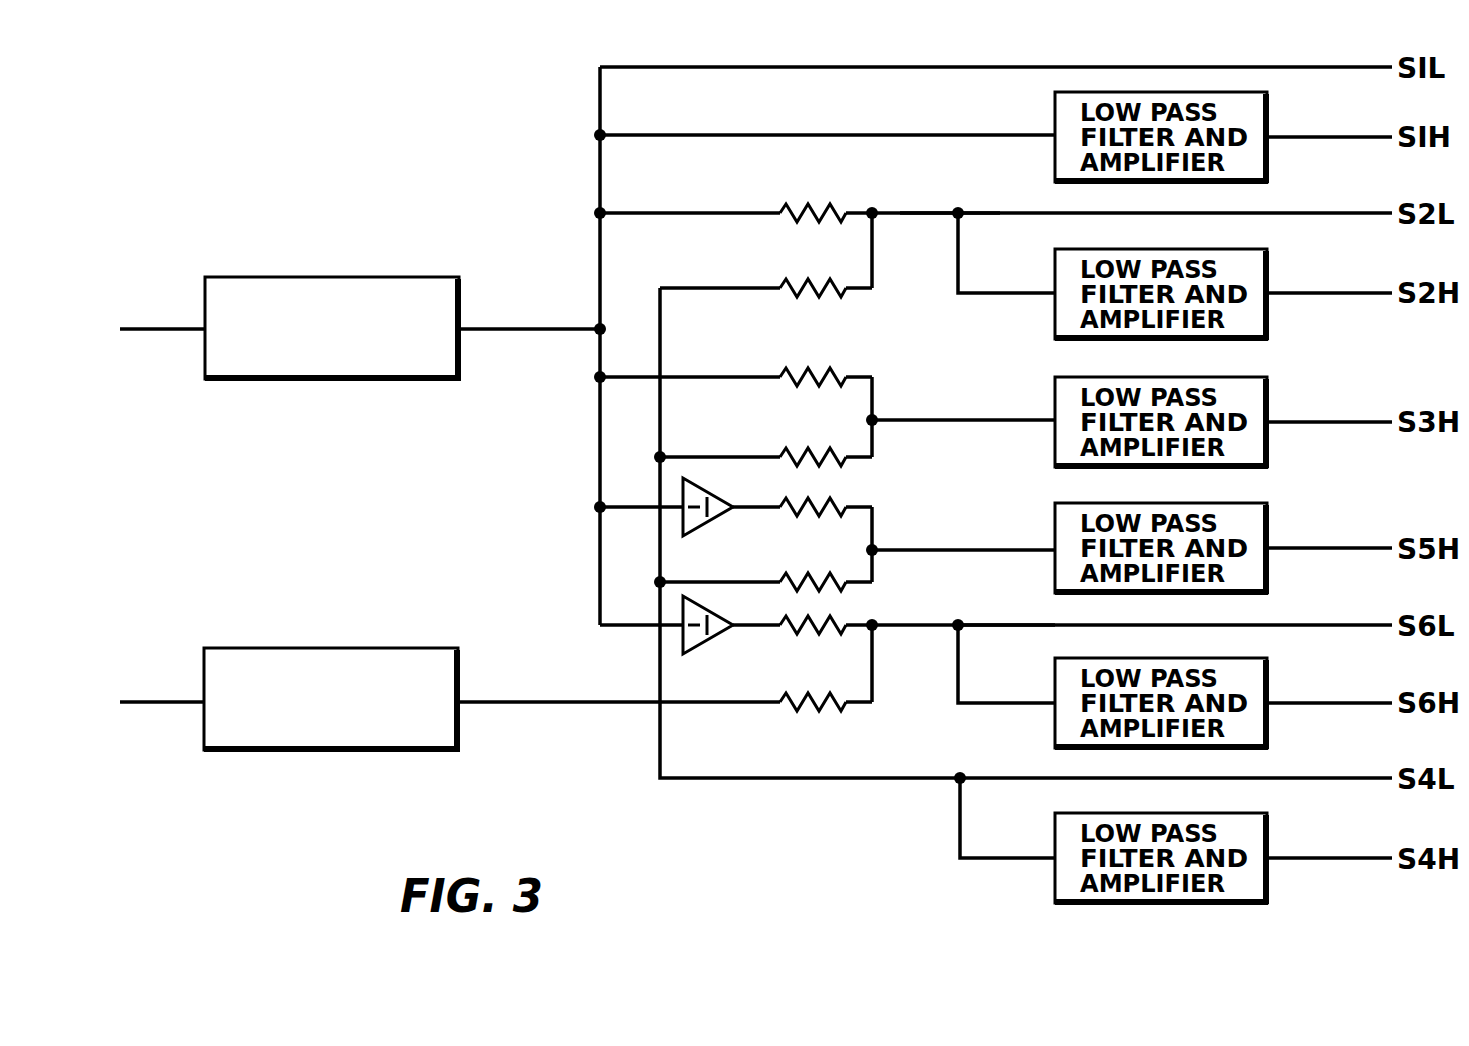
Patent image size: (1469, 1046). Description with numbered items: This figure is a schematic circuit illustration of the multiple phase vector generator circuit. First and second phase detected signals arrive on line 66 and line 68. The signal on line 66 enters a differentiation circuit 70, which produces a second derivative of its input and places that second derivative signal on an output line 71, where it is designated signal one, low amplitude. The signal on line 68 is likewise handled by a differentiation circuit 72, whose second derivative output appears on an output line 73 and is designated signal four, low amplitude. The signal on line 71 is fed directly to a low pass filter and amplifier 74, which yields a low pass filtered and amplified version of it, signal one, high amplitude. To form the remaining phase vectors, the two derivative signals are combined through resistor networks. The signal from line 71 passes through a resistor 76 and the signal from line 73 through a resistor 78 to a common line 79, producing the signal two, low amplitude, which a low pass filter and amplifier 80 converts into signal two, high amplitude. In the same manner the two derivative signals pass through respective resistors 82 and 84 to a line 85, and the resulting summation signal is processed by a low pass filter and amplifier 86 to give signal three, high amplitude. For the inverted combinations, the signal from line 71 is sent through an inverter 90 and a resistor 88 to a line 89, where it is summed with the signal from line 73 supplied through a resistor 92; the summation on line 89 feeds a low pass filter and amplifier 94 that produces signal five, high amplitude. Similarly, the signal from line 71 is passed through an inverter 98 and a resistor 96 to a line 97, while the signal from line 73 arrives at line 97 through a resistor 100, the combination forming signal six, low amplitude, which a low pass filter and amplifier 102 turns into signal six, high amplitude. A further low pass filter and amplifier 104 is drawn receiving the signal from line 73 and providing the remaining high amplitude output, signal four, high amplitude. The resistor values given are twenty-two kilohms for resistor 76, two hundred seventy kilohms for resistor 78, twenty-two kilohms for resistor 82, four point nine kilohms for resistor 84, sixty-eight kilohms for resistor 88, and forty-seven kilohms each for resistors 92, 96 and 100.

The line 66 is at (150, 328).
The line 68 is at (152, 702).
The differentiation circuit 70 is at (365, 292).
The output line 71 is at (521, 329).
The differentiation circuit 72 is at (332, 665).
The output line 73 is at (543, 701).
The low pass filter and amplifier 74 is at (1248, 124).
The resistor 76 is at (801, 203).
The resistor 78 is at (799, 280).
The line 79 is at (934, 213).
The low pass filter and amplifier 80 is at (1254, 272).
The resistor 82 is at (816, 374).
The resistor 84 is at (801, 450).
The line 85 is at (958, 420).
The low pass filter and amplifier 86 is at (1254, 401).
The resistor 88 is at (826, 506).
The line 89 is at (976, 550).
The inverter 90 is at (692, 523).
The resistor 92 is at (810, 580).
The low pass filter and amplifier 94 is at (1254, 527).
The resistor 96 is at (844, 622).
The line 97 is at (994, 624).
The inverter 98 is at (694, 641).
The resistor 100 is at (810, 712).
The low pass filter and amplifier 102 is at (1252, 686).
The low pass filter and amplifier 104 is at (1252, 842).